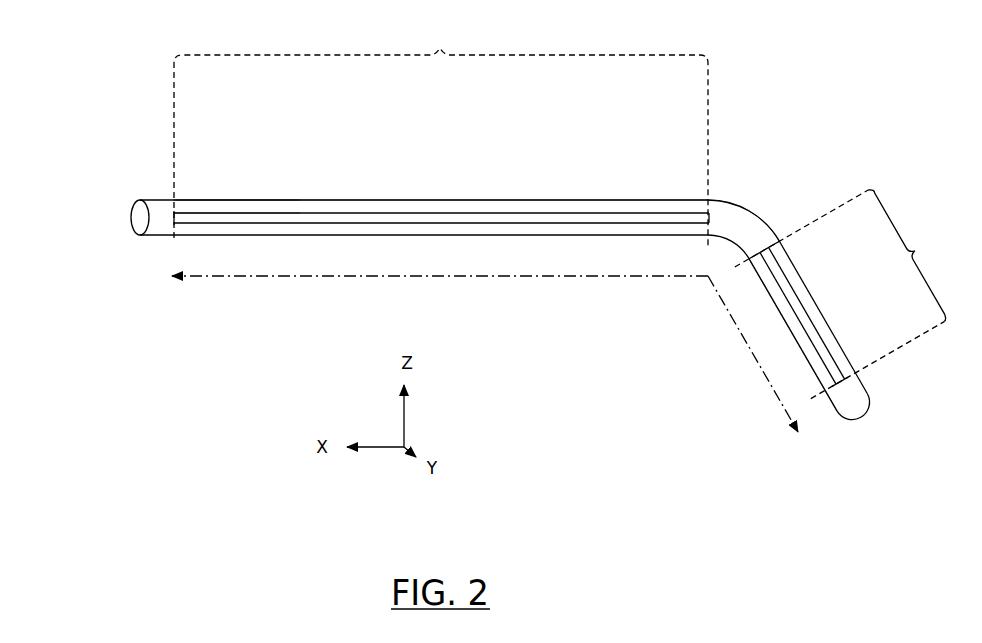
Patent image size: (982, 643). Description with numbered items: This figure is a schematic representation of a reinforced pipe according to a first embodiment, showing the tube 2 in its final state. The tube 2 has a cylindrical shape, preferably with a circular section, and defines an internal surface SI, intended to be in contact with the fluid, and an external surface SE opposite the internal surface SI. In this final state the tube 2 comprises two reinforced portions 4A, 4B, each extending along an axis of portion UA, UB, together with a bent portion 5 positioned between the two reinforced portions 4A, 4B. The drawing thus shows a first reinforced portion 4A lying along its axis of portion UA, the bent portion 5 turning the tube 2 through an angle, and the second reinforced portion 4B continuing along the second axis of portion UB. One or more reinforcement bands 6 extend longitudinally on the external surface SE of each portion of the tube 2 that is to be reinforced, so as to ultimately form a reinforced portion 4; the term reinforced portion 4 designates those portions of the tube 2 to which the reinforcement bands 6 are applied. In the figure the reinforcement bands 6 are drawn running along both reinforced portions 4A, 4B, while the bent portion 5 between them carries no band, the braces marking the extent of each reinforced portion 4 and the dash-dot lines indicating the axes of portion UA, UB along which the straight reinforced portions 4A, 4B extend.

The tube 2 is at (77, 206).
The reinforced portion 4 is at (560, 213).
The first reinforced portion 4A is at (382, 196).
The second reinforced portion 4B is at (797, 347).
The bent portion 5 is at (753, 211).
The reinforcement band 6 is at (500, 212).
The internal surface SI is at (238, 209).
The external surface SE is at (257, 196).
The axis of portion UA is at (422, 278).
The axis of portion UB is at (764, 368).